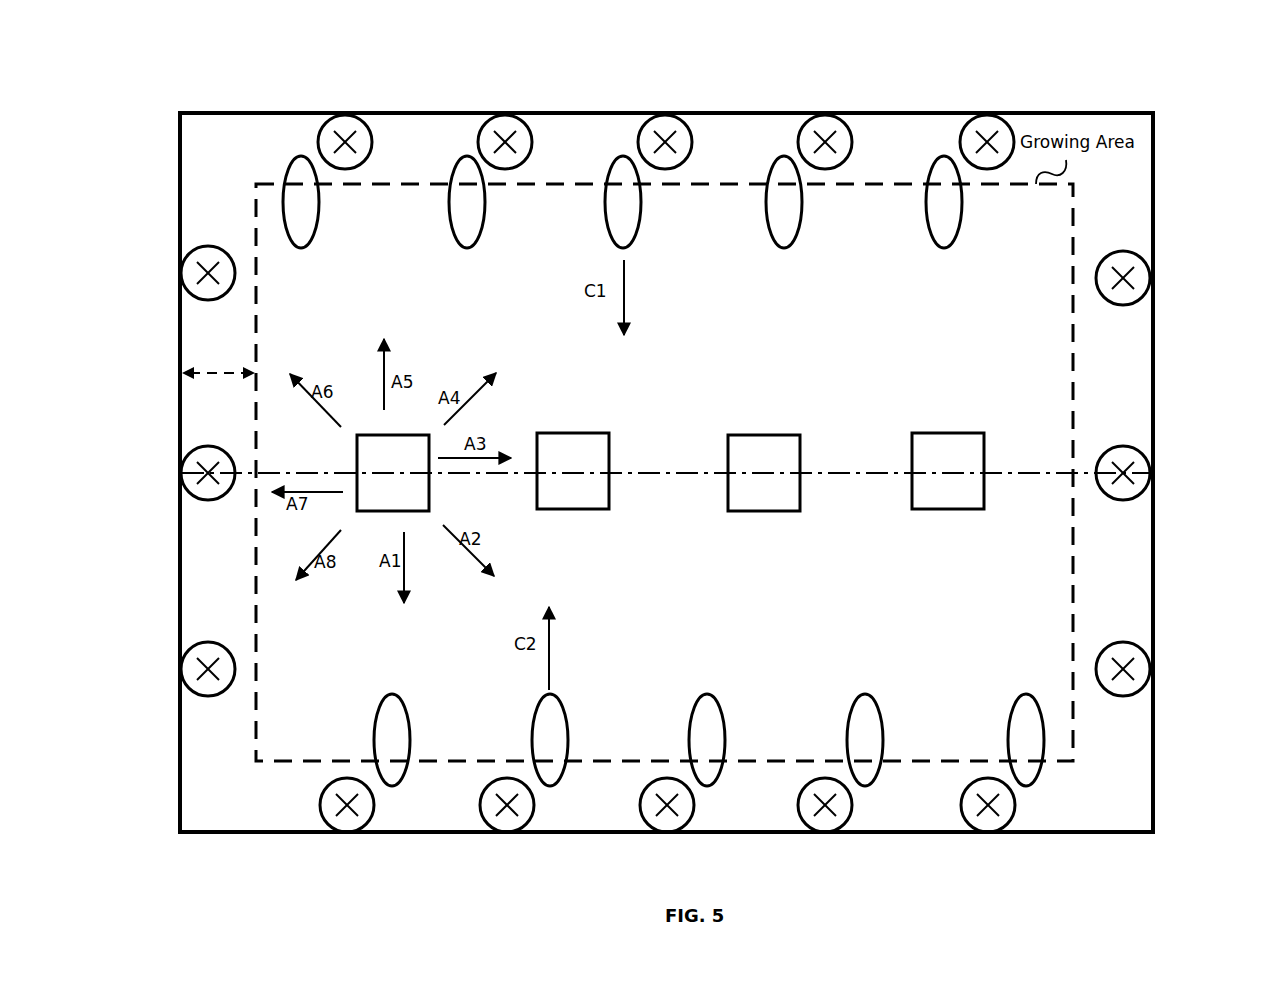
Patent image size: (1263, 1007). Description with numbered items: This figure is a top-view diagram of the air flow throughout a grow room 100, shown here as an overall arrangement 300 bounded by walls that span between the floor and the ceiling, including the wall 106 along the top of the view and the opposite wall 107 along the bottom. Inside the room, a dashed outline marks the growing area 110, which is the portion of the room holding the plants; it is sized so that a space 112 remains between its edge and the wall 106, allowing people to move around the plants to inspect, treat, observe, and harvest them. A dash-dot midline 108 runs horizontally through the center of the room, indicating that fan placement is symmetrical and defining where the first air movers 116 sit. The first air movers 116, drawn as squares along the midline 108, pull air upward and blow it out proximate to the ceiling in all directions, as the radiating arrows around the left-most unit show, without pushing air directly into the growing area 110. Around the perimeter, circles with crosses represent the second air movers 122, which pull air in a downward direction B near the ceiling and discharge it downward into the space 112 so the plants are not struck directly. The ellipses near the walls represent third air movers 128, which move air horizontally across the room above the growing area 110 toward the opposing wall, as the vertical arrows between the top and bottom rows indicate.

The growing system 300 is at (213, 98).
The wall 106 is at (252, 110).
The bottom wall 107 is at (228, 834).
The grow room 100 is at (870, 112).
The downward direction B is at (349, 146).
The second air mover 122 is at (1152, 275).
The growing area 110 is at (598, 206).
The third air mover 128 is at (803, 222).
The midline 108 is at (1043, 470).
The space 112 is at (198, 374).
The first air mover 116 is at (800, 509).